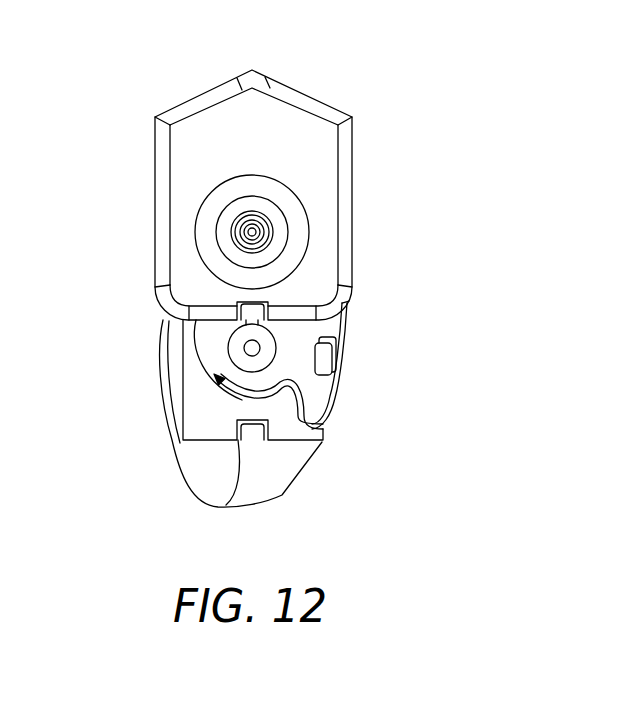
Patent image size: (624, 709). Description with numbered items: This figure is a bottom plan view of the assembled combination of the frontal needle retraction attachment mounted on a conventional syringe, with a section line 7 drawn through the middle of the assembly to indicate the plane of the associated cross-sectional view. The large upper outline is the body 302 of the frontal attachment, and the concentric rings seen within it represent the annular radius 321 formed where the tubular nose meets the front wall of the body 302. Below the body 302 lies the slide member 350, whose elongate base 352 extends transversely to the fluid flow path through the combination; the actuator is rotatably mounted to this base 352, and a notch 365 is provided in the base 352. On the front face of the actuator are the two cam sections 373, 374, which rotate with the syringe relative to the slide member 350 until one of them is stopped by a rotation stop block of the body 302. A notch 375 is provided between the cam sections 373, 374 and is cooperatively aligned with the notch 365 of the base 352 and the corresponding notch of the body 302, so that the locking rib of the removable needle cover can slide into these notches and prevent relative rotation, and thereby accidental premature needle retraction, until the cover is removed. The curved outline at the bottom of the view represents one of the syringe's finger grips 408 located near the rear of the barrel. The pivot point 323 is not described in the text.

The section line 7- 7 is at (252, 38).
The body 302 is at (152, 202).
The annular radius 321 is at (300, 229).
The pivot 323 is at (232, 340).
The slide member 350 is at (192, 398).
The base 352 is at (196, 430).
The notch 365 is at (249, 425).
The cam section 373 is at (347, 307).
The cam section 374 is at (318, 430).
The notch 375 is at (334, 362).
The finger grip 408 is at (275, 490).